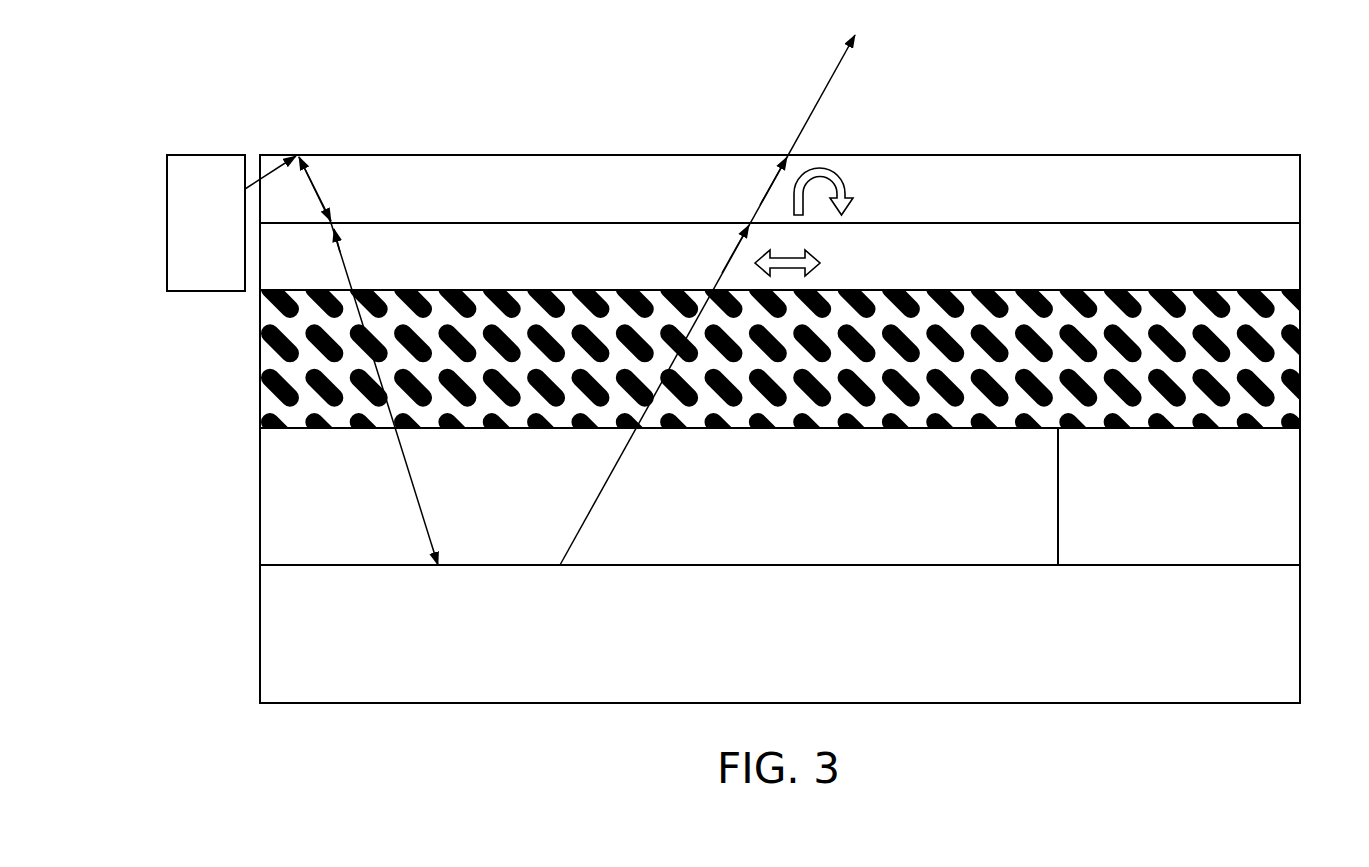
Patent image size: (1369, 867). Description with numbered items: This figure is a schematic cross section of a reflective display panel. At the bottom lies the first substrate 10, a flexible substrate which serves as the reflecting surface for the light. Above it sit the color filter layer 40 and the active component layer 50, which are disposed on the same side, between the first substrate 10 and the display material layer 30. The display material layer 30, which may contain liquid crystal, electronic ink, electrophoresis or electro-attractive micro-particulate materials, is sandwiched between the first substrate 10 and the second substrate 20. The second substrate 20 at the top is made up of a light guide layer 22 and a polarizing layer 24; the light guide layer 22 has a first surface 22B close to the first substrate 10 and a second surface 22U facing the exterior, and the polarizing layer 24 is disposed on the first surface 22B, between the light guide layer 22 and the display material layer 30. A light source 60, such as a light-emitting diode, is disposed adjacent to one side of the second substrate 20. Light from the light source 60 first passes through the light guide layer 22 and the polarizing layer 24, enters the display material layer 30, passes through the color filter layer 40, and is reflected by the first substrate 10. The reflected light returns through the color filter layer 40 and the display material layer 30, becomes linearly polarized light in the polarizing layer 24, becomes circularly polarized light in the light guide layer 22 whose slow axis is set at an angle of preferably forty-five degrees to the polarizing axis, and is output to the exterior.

The first substrate 10 is at (792, 648).
The second substrate 20 is at (810, 192).
The light guide layer 22 is at (897, 203).
The second surface 22U is at (1172, 155).
The first surface 22B is at (1172, 223).
The polarizing layer 24 is at (897, 273).
The display material layer 30 is at (1290, 362).
The color filter layer 40 is at (792, 512).
The active component layer 50 is at (1192, 512).
The light source 60 is at (180, 222).